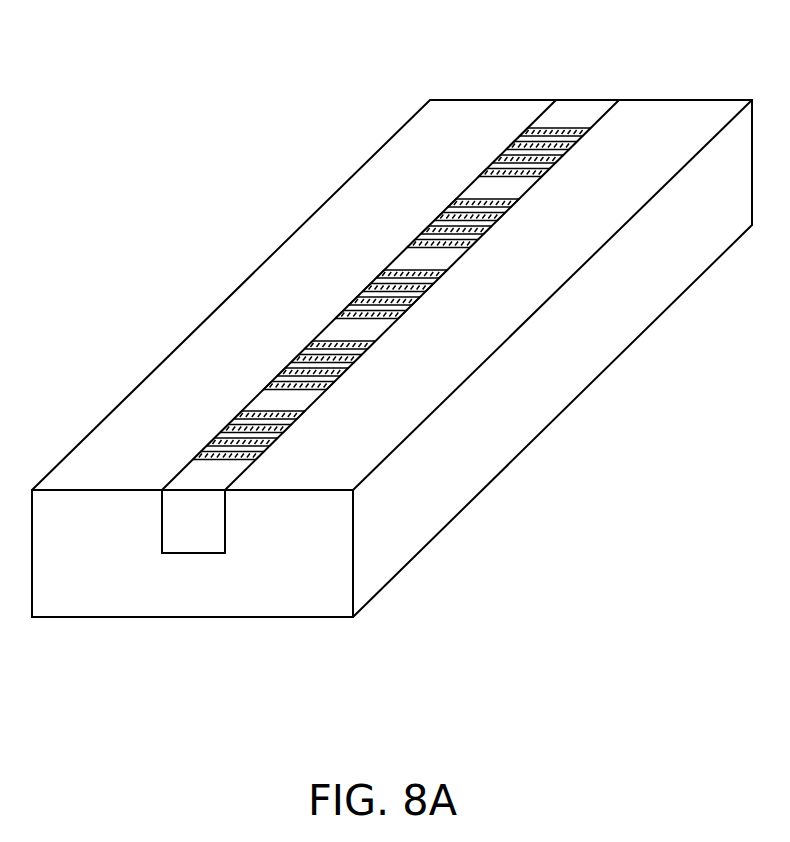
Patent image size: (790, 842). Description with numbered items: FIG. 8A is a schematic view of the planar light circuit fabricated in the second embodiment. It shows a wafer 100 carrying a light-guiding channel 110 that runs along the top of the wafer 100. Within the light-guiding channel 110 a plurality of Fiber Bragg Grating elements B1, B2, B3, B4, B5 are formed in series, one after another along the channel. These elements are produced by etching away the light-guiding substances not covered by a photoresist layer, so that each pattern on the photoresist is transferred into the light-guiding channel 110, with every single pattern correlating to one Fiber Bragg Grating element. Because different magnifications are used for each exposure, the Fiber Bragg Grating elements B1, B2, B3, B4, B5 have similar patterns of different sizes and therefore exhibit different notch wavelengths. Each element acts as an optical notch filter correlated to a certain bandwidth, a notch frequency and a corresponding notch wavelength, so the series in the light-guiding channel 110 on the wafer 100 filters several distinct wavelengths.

The wafer 100 is at (282, 594).
The light-guiding channel 110 is at (584, 108).
The Fiber Bragg Grating element B1 is at (258, 436).
The Fiber Bragg Grating element B2 is at (330, 366).
The Fiber Bragg Grating element B3 is at (401, 296).
The Fiber Bragg Grating element B4 is at (473, 224).
The Fiber Bragg Grating element B5 is at (546, 153).